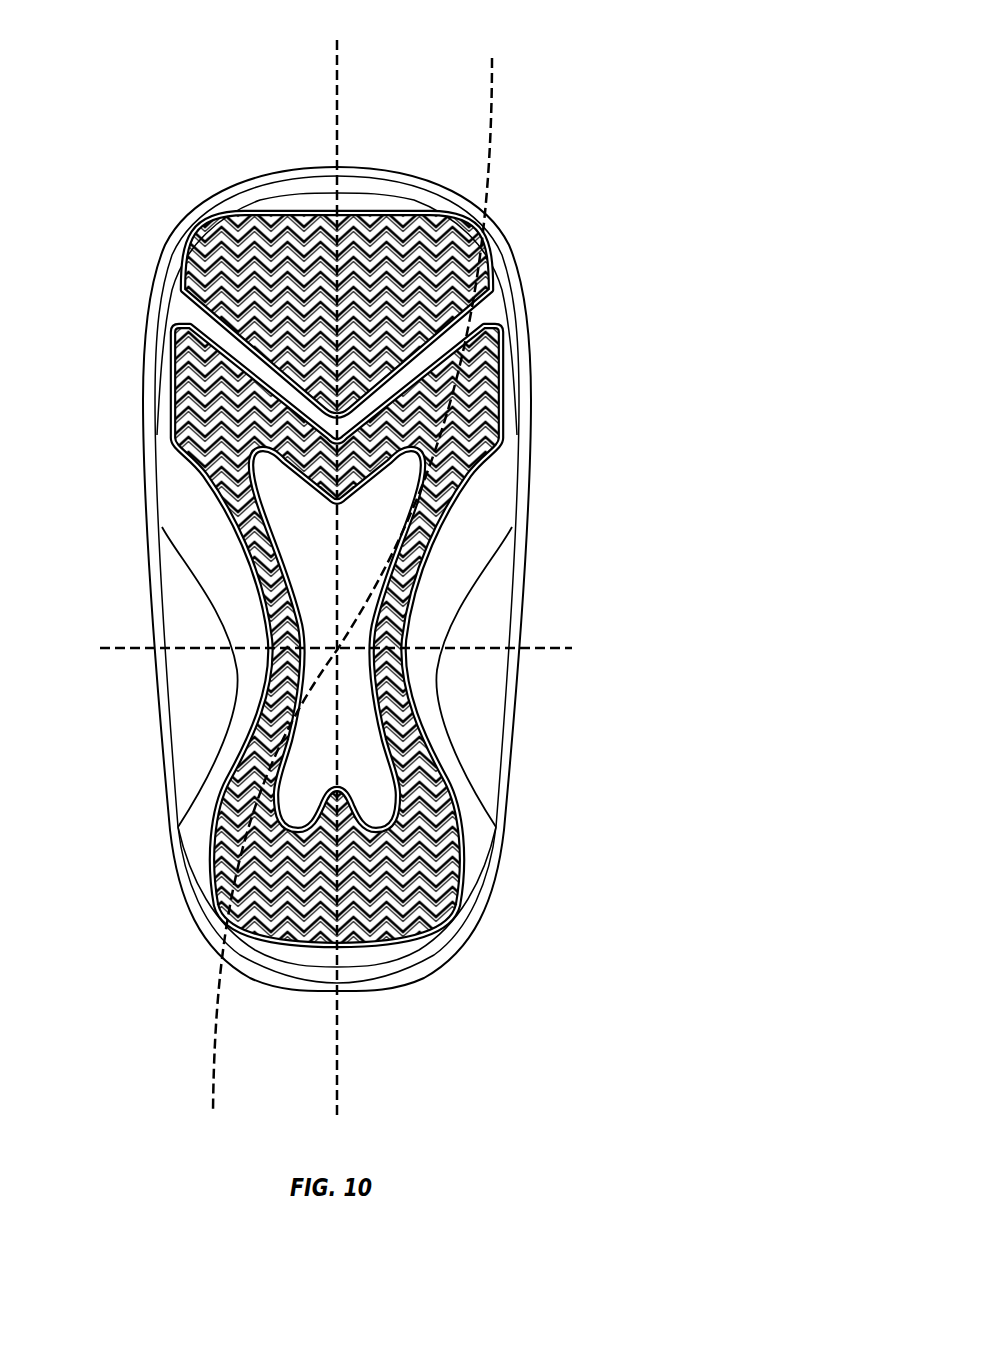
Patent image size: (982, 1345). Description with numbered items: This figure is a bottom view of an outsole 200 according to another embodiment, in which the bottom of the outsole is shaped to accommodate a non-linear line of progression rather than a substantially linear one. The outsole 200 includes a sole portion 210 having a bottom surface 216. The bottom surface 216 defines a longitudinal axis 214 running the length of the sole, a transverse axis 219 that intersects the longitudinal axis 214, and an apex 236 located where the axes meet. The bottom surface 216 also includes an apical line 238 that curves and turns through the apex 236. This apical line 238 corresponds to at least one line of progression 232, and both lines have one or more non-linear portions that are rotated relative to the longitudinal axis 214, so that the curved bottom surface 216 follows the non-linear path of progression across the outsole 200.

The outsole 200 is at (399, 565).
The sole portion 210 is at (135, 445).
The longitudinal axis 214 is at (338, 59).
The bottom surface 216 is at (480, 518).
The transverse axis 219 is at (550, 647).
The line of progression 232 is at (429, 585).
The apical line 238 is at (486, 147).
The apex 236 is at (340, 652).